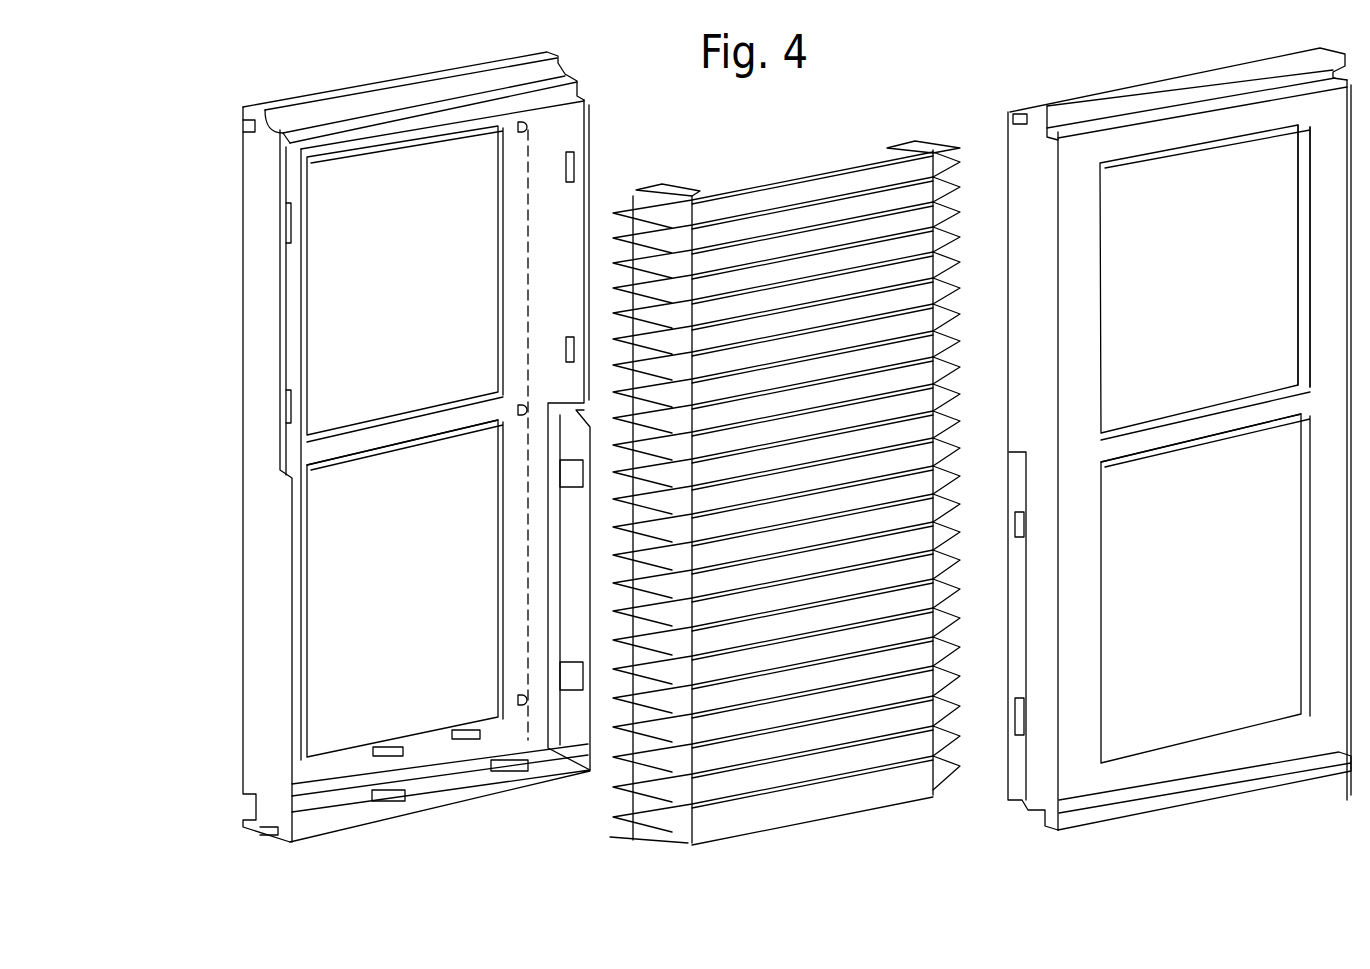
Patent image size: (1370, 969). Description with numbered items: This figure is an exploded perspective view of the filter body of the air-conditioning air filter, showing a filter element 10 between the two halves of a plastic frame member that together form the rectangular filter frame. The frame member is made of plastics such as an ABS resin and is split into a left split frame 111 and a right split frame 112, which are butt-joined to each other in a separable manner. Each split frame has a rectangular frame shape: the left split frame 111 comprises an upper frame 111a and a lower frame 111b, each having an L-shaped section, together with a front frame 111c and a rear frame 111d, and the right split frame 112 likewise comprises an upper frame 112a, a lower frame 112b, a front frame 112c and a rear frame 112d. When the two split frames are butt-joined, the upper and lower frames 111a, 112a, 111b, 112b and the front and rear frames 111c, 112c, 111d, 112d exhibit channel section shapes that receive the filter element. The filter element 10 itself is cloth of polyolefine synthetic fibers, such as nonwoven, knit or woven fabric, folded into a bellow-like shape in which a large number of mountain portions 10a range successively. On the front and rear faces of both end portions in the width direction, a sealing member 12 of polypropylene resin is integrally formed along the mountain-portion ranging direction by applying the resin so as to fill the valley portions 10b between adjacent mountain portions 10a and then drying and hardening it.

The filter element 10 is at (830, 153).
The mountain portions 10a is at (843, 777).
The valley portions 10b is at (762, 780).
The sealing member 12 is at (698, 210).
The left split frame 111 is at (349, 88).
The upper frame of left split frame 111a is at (548, 56).
The lower frame of left split frame 111b is at (472, 790).
The front frame of left split frame 111c is at (250, 167).
The rear frame of left split frame 111d is at (568, 210).
The right split frame 112 is at (1048, 103).
The upper frame of right split frame 112a is at (1115, 97).
The lower frame of right split frame 112b is at (1262, 787).
The front frame of right split frame 112c is at (1017, 175).
The rear frame of right split frame 112d is at (1300, 270).